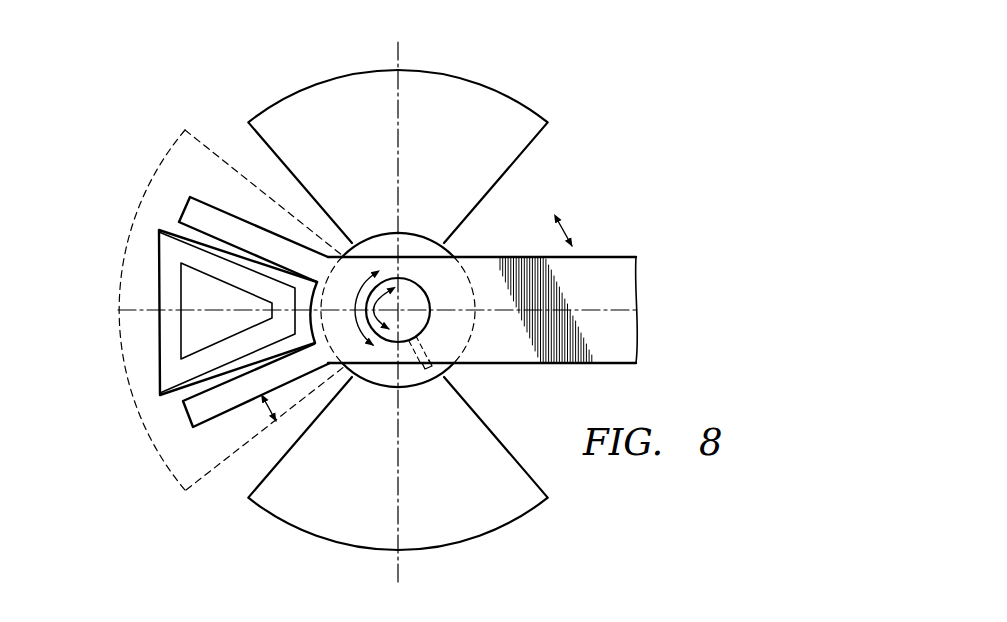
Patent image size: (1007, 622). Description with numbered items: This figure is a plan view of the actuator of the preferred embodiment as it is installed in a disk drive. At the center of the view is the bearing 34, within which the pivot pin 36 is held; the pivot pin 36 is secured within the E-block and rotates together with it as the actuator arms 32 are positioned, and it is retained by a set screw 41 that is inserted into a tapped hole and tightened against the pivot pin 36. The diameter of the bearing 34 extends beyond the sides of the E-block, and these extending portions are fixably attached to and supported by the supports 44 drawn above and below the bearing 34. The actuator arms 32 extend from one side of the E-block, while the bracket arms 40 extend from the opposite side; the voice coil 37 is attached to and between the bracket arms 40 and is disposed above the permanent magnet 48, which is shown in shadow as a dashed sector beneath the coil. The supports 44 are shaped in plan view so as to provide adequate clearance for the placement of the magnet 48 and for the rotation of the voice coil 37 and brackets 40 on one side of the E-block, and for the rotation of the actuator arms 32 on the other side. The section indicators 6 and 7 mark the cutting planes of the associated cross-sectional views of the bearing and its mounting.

The section line 6- 6 is at (650, 362).
The section line 7- 7 is at (398, 24).
The actuator arms 32 is at (622, 256).
The bearing 34 is at (452, 248).
The pivot pin 36 is at (421, 300).
The voice coil 37 is at (158, 258).
The bracket arms 40 is at (183, 211).
The set screw 41 is at (431, 370).
The supports 44 is at (462, 146).
The permanent magnet 48 is at (190, 488).